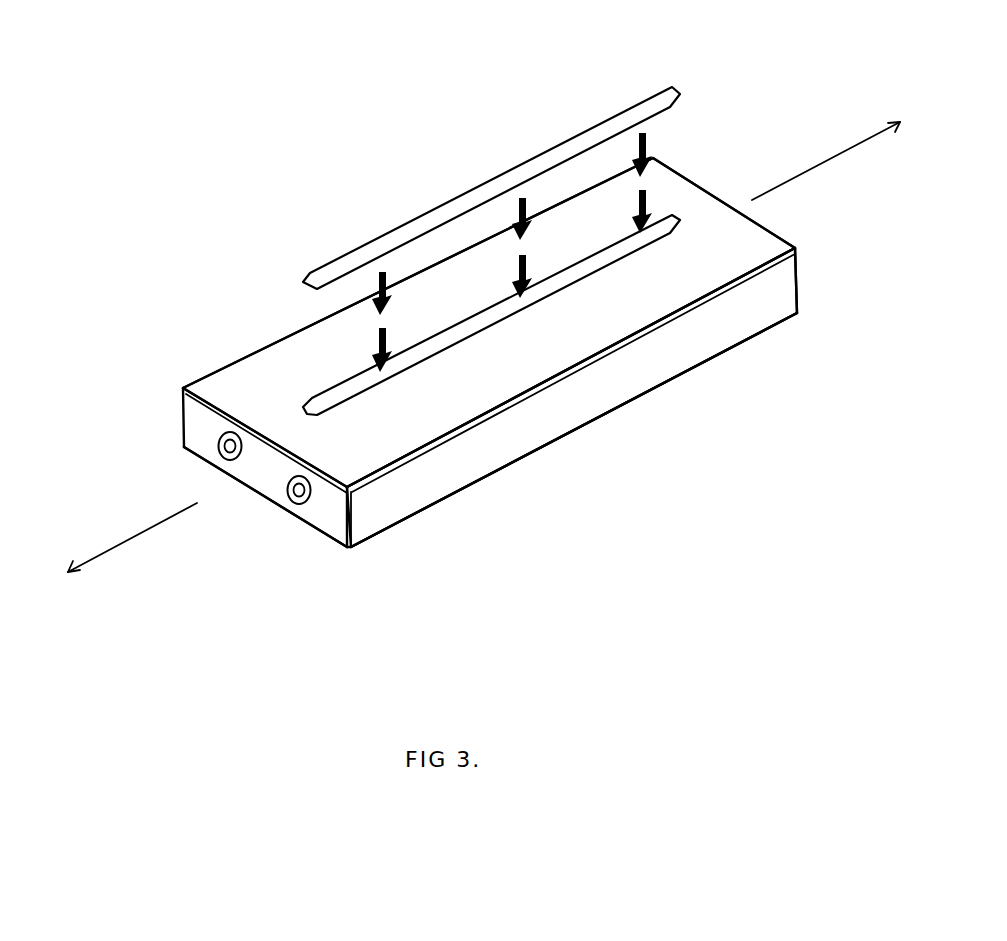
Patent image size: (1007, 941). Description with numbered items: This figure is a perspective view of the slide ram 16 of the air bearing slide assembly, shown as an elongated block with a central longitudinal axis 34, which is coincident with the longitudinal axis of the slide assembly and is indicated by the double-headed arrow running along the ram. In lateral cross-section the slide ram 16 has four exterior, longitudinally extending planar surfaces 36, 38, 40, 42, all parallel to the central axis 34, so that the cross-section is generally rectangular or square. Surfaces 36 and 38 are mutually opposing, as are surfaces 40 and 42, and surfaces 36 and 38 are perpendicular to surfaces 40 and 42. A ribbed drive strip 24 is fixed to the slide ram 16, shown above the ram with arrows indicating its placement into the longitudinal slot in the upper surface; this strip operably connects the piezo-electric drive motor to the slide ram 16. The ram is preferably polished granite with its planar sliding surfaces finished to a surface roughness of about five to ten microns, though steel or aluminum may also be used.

The slide ram 16 is at (252, 320).
The ribbed drive strip 24 is at (627, 103).
The central longitudinal axis 34 is at (127, 530).
The planar surface 36 is at (556, 340).
The planar surface 38 is at (448, 503).
The planar surface 40 is at (606, 388).
The planar surface 42 is at (215, 358).